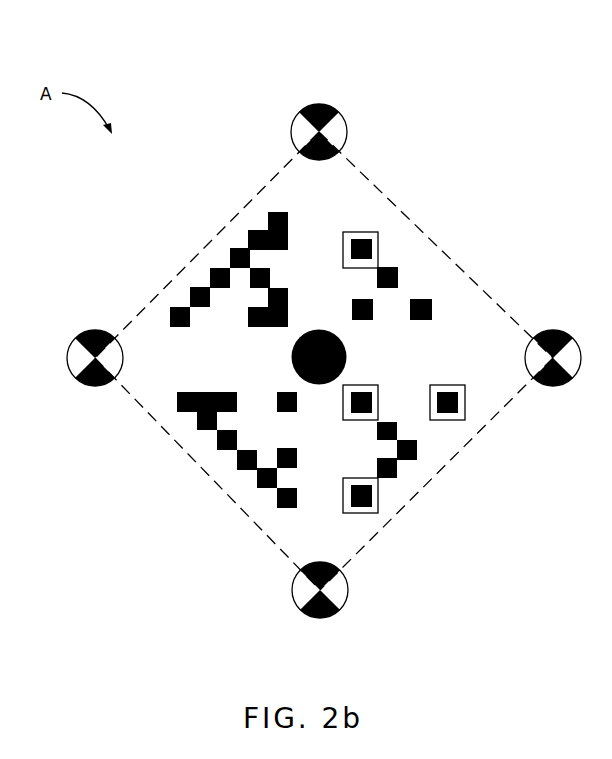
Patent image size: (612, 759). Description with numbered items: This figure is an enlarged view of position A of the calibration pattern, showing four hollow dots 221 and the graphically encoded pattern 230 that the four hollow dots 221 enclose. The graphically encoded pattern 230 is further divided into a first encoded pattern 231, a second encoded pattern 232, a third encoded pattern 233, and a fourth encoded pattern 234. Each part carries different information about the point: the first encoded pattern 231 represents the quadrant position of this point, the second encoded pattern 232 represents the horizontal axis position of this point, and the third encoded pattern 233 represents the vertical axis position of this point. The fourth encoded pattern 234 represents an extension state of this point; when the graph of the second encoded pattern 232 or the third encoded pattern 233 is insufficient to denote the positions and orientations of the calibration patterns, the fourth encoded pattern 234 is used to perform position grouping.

The hollow dot 221 is at (328, 103).
The graphically encoded pattern 230 is at (200, 287).
The first encoded pattern 231 is at (229, 250).
The second encoded pattern 232 is at (386, 267).
The third encoded pattern 233 is at (237, 468).
The fourth encoded pattern 234 is at (417, 456).